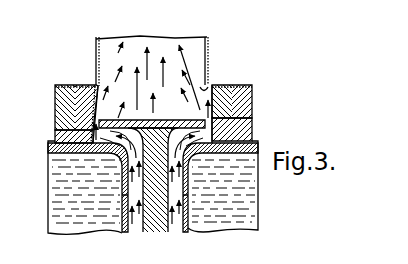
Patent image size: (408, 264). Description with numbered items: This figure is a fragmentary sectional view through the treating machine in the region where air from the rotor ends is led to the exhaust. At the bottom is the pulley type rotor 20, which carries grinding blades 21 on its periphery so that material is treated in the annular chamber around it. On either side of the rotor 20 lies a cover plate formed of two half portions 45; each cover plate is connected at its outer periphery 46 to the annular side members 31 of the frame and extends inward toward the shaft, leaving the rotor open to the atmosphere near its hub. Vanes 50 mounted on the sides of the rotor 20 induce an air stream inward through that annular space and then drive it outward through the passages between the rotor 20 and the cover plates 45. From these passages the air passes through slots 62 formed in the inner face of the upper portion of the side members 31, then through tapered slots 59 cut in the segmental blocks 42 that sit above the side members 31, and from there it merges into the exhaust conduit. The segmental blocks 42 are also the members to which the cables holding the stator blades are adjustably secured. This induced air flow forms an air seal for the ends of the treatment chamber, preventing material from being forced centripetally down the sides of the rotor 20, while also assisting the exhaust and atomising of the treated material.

The cover plate half portions 45 is at (206, 42).
The tapered slots 59 is at (208, 79).
The grinding blades 21 is at (92, 116).
The segmental blocks 42 is at (94, 85).
The annular side members 31 is at (252, 106).
The vanes 50 is at (152, 121).
The slots 62 is at (242, 124).
The outer periphery 46 is at (257, 137).
The rotor 20 is at (103, 152).